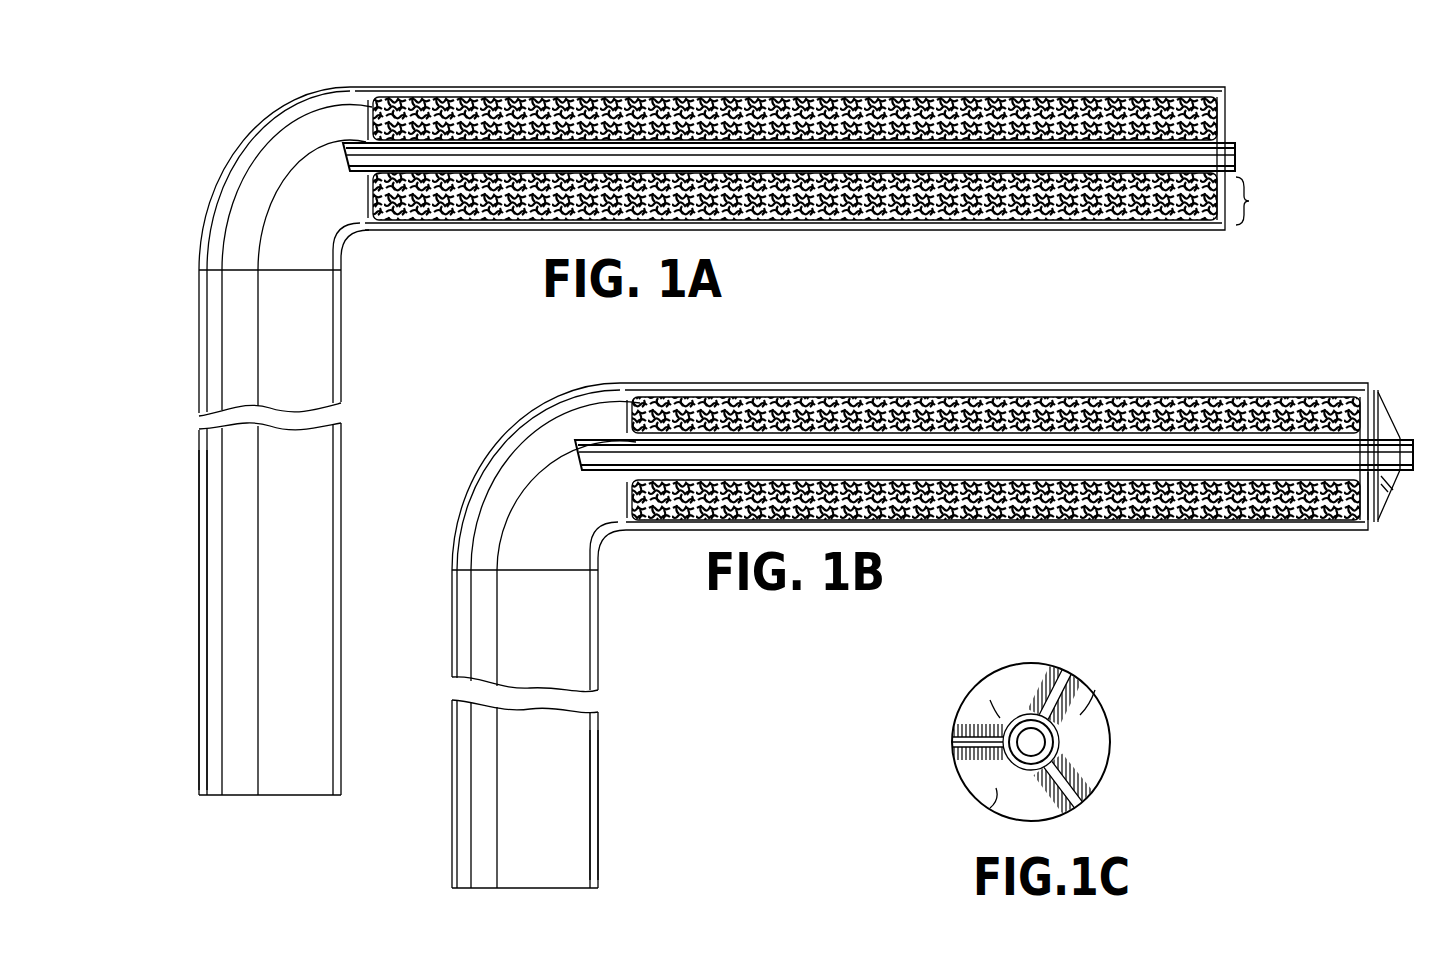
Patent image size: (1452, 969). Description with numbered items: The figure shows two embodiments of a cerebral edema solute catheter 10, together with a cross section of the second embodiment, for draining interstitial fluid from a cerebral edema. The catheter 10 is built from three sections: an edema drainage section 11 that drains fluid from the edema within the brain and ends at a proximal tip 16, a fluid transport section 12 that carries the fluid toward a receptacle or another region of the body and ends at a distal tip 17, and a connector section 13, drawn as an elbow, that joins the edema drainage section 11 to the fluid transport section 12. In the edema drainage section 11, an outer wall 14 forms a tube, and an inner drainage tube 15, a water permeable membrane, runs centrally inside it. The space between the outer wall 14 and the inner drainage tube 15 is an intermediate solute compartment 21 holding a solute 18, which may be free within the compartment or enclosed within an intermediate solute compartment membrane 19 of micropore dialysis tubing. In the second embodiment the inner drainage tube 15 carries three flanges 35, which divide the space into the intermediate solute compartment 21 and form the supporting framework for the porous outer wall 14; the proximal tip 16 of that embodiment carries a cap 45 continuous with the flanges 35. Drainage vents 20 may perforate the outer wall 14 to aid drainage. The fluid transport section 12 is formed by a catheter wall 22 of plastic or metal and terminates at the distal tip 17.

In FIG. 1A, the cerebral edema solute catheter 10 is at (228, 92).
In FIG. 1A, the edema drainage section 11 is at (925, 237).
In FIG. 1B, the edema drainage section 11 is at (975, 542).
In FIG. 1A, the fluid transport section 12 is at (345, 490).
In FIG. 1B, the fluid transport section 12 is at (600, 722).
In FIG. 1A, the connector section 13 is at (248, 142).
In FIG. 1B, the connector section 13 is at (482, 447).
In FIG. 1A, the outer wall 14 is at (1070, 88).
In FIG. 1B, the outer wall 14 is at (1178, 530).
In FIG. 1C, the outer wall 14 is at (1112, 716).
In FIG. 1A, the inner drainage tube 15 is at (1232, 140).
In FIG. 1B, the inner drainage tube 15 is at (1167, 453).
In FIG. 1C, the inner drainage tube 15 is at (1050, 745).
In FIG. 1A, the proximal tip 16 is at (1282, 160).
In FIG. 1B, the proximal tip 16 is at (1417, 422).
In FIG. 1A, the distal tip 17 is at (325, 815).
In FIG. 1B, the distal tip 17 is at (575, 895).
In FIG. 1A, the solute 18 is at (797, 103).
In FIG. 1B, the solute 18 is at (890, 405).
In FIG. 1A, the intermediate solute compartment membrane 19 is at (373, 112).
In FIG. 1B, the intermediate solute compartment membrane 19 is at (620, 412).
In FIG. 1A, the drainage vents 20 is at (1259, 201).
In FIG. 1C, the intermediate solute compartment 21 is at (995, 700).
In FIG. 1A, the catheter wall 22 is at (200, 668).
In FIG. 1B, the catheter wall 22 is at (600, 808).
In FIG. 1B, the flanges 35 is at (1385, 490).
In FIG. 1C, the flanges 35 is at (1020, 688).
In FIG. 1B, the cap 45 is at (1365, 530).
In FIG. 1C, the cap 45 is at (960, 722).